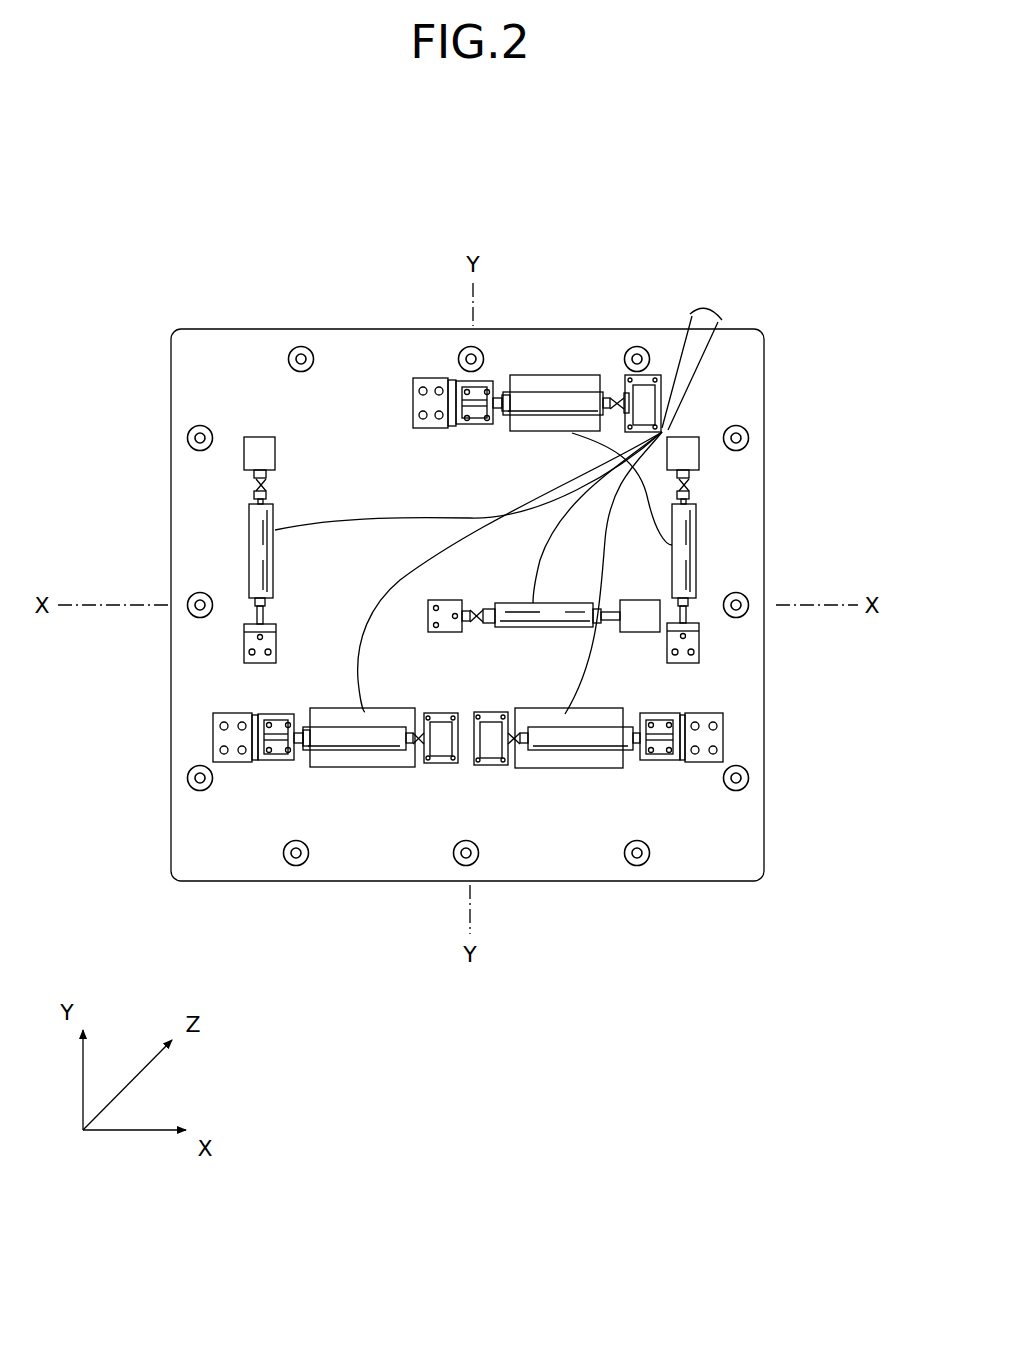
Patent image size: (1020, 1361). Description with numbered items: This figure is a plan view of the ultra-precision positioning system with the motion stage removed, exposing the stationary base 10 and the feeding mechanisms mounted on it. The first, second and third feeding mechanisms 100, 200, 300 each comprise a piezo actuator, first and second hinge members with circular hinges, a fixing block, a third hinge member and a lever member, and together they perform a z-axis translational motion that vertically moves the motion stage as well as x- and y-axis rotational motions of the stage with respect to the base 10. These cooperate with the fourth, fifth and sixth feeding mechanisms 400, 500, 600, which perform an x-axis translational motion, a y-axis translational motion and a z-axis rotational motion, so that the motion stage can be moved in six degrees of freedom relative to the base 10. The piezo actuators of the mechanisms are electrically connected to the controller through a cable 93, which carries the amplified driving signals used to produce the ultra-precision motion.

The stationary base 10 is at (224, 350).
The cable 93 is at (702, 352).
The first feeding mechanism 100 is at (604, 320).
The second feeding mechanism 200 is at (280, 803).
The third feeding mechanism 300 is at (673, 755).
The fourth feeding mechanism 400 is at (530, 598).
The fifth feeding mechanism 500 is at (234, 546).
The sixth feeding mechanism 600 is at (705, 545).